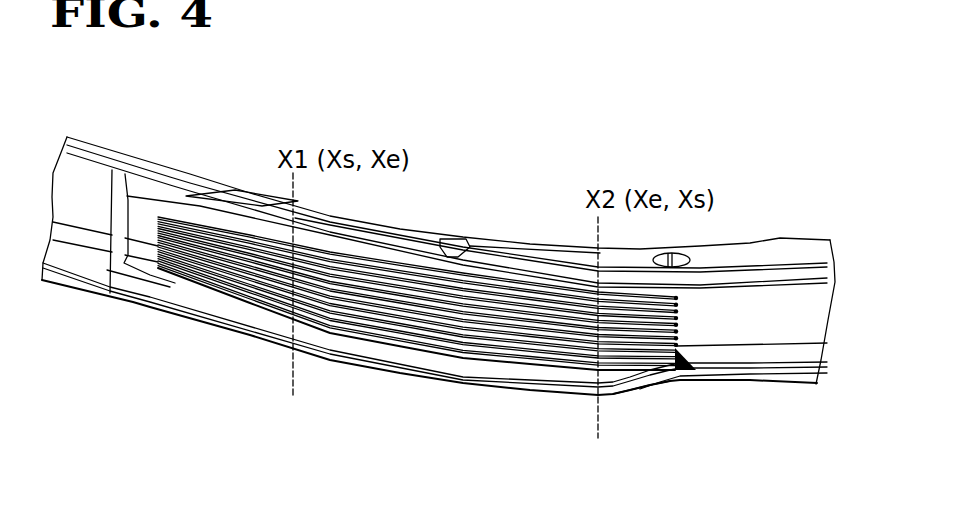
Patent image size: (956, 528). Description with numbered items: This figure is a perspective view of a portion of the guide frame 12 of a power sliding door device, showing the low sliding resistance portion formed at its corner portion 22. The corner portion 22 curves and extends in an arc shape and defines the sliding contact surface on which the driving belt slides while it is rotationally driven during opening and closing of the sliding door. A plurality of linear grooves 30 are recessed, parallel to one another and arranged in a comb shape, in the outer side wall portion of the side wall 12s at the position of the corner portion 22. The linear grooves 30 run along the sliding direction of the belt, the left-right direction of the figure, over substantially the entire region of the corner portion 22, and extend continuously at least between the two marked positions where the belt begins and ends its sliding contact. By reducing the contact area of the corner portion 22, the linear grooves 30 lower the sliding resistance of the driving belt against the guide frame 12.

The guide frame 12 is at (783, 249).
The side wall portion 12s is at (94, 217).
The linear grooves 30 is at (695, 292).
The corner portion 22 is at (657, 393).